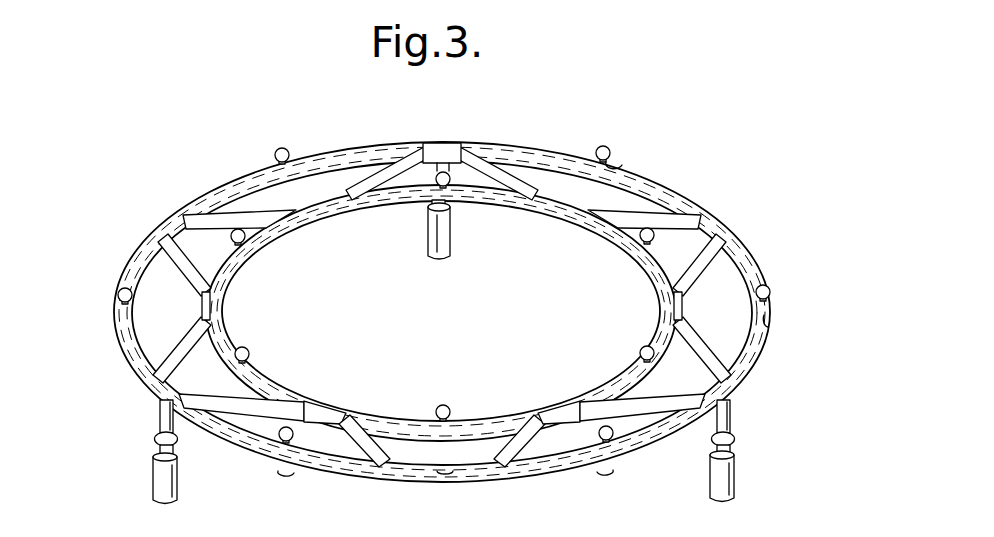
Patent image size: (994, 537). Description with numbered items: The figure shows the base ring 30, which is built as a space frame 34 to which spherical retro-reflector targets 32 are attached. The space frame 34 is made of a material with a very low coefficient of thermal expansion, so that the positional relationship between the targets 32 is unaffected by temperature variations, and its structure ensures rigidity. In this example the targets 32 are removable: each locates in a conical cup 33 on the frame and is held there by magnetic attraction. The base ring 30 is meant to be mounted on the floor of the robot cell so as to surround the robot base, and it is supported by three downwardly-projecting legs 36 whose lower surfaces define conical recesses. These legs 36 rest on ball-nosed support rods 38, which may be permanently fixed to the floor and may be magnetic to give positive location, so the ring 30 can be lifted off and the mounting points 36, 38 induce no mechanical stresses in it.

The base ring 30 is at (762, 200).
The spherical retro-reflector target 32 is at (281, 148).
The conical cup 33 is at (636, 161).
The space frame 34 is at (334, 468).
The downwardly-projecting leg 36 is at (436, 143).
The ball-nosed support rod 38 is at (438, 266).